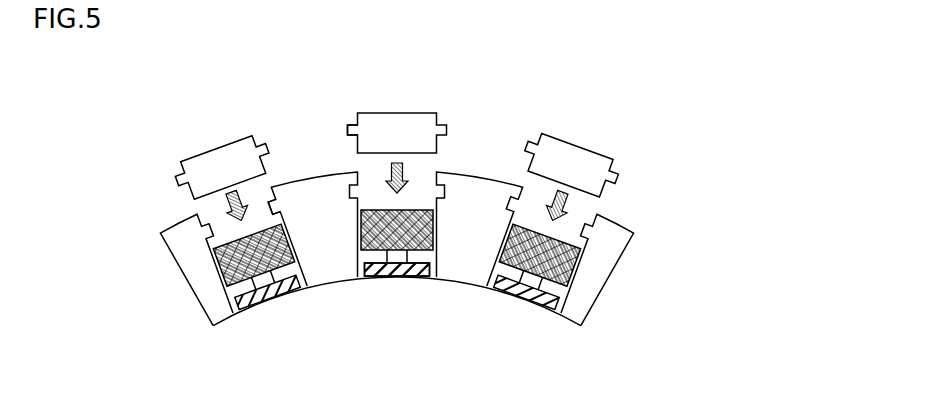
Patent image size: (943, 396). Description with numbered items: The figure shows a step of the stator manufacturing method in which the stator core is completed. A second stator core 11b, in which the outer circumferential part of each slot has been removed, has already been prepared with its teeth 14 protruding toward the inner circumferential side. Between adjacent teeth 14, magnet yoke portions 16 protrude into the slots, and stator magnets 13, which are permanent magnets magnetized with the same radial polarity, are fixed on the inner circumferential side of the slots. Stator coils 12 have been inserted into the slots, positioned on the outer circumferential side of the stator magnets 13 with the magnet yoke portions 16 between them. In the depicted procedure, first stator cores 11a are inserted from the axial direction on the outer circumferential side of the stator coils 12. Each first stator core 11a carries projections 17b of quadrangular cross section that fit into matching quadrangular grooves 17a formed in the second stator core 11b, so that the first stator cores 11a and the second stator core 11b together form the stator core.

The first stator core 11a is at (395, 118).
The second stator core 11b is at (313, 173).
The stator coil 12 is at (440, 210).
The stator magnet 13 is at (433, 278).
The tooth 14 is at (335, 258).
The magnet yoke portion 16 is at (390, 278).
The groove 17a is at (280, 205).
The projection 17b is at (349, 125).